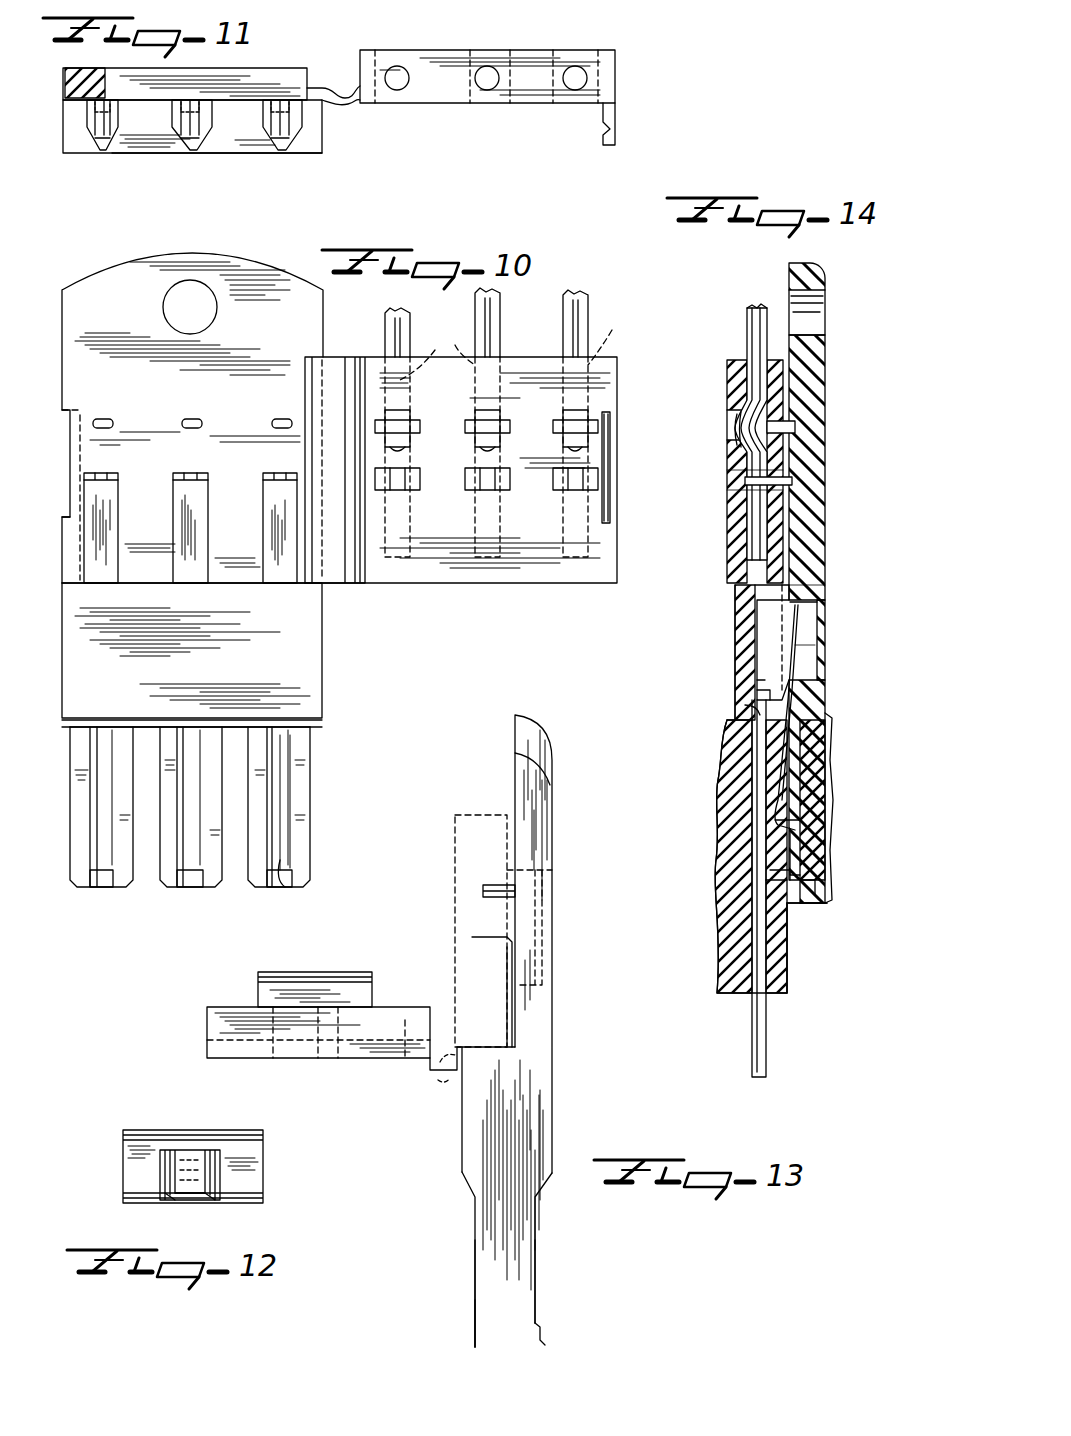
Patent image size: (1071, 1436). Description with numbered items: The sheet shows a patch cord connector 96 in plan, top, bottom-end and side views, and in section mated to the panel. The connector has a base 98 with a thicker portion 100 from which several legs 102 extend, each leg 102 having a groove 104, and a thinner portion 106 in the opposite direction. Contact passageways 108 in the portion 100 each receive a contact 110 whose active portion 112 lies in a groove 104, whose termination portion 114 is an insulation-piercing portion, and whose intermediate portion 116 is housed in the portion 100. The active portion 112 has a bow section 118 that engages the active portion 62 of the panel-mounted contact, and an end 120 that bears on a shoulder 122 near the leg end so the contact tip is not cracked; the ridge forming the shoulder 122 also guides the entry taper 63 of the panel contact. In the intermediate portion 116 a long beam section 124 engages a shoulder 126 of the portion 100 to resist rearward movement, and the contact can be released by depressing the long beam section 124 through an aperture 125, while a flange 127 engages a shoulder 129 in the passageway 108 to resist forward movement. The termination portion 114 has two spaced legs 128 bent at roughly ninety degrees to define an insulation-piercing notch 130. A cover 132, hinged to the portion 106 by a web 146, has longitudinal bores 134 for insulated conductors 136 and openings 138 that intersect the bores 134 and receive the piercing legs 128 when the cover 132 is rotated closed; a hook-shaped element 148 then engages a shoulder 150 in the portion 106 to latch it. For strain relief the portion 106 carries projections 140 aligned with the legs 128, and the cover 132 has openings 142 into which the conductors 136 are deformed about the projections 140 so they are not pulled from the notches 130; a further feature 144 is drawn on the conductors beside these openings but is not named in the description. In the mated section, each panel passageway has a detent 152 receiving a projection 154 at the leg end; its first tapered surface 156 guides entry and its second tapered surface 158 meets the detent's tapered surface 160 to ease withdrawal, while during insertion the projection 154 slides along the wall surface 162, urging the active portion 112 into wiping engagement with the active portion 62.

In FIG. 14, the active portion of panel mounted contact 62 is at (748, 822).
In FIG. 14, the entry taper 63 is at (750, 712).
In FIG. 11, the patch cord connector 96 is at (110, 158).
In FIG. 10, the patch cord connector 96 is at (68, 865).
In FIG. 13, the patch cord connector 96 is at (472, 1272).
In FIG. 10, the base 98 is at (62, 583).
In FIG. 13, the base 98 is at (535, 1025).
In FIG. 11, the base portion 100 is at (320, 153).
In FIG. 10, the base portion 100 is at (72, 672).
In FIG. 13, the base portion 100 is at (462, 1150).
In FIG. 12, the base portion 100 is at (145, 1130).
In FIG. 10, the leg 102 is at (70, 795).
In FIG. 13, the leg 102 is at (520, 1238).
In FIG. 10, the groove 104 is at (95, 872).
In FIG. 11, the body portion 106 is at (262, 72).
In FIG. 10, the body portion 106 is at (75, 387).
In FIG. 14, the body portion 106 is at (820, 338).
In FIG. 13, the body portion 106 is at (515, 782).
In FIG. 14, the contact passageway 108 is at (742, 615).
In FIG. 10, the contact 110 is at (308, 588).
In FIG. 10, the active portion 112 is at (280, 800).
In FIG. 14, the active portion 112 is at (752, 768).
In FIG. 12, the active portion 112 is at (190, 1150).
In FIG. 10, the termination portion 114 is at (90, 540).
In FIG. 14, the termination portion 114 is at (795, 483).
In FIG. 14, the intermediate portion 116 is at (800, 670).
In FIG. 14, the bow section 118 is at (790, 812).
In FIG. 14, the end 120 is at (760, 868).
In FIG. 10, the shoulder 122 is at (280, 880).
In FIG. 14, the shoulder 122 is at (770, 888).
In FIG. 12, the shoulder 122 is at (192, 1195).
In FIG. 14, the long beam section 124 is at (812, 620).
In FIG. 14, the aperture 125 is at (815, 645).
In FIG. 14, the shoulder 126 is at (828, 610).
In FIG. 14, the flange 127 is at (760, 672).
In FIG. 14, the shoulder 129 is at (760, 690).
In FIG. 11, the spaced legs 128 is at (88, 123).
In FIG. 10, the spaced legs 128 is at (118, 478).
In FIG. 14, the spaced legs 128 is at (730, 478).
In FIG. 13, the spaced legs 128 is at (478, 940).
In FIG. 11, the insulation-piercing notch 130 is at (98, 148).
In FIG. 11, the cover 132 is at (525, 52).
In FIG. 14, the cover 132 is at (733, 530).
In FIG. 13, the cover 132 is at (238, 1060).
In FIG. 11, the longitudinal bore 134 is at (405, 85).
In FIG. 10, the longitudinal bore 134 is at (521, 341).
In FIG. 10, the insulated patch cord conductor 136 is at (385, 340).
In FIG. 14, the insulated patch cord conductor 136 is at (755, 342).
In FIG. 11, the opening 138 is at (478, 60).
In FIG. 10, the opening 138 is at (422, 480).
In FIG. 11, the projection 140 is at (120, 125).
In FIG. 10, the projection 140 is at (275, 420).
In FIG. 14, the projection 140 is at (795, 433).
In FIG. 13, the projection 140 is at (483, 885).
In FIG. 10, the opening 142 is at (410, 422).
In FIG. 10, the crimp portion 144 is at (405, 455).
In FIG. 14, the crimp portion 144 is at (735, 415).
In FIG. 11, the web 146 is at (345, 85).
In FIG. 10, the web 146 is at (342, 590).
In FIG. 13, the web 146 is at (445, 1082).
In FIG. 11, the hook-shaped element 148 is at (600, 135).
In FIG. 10, the hook-shaped element 148 is at (612, 520).
In FIG. 13, the hook-shaped element 148 is at (335, 972).
In FIG. 11, the shoulder 150 is at (70, 82).
In FIG. 10, the shoulder 150 is at (72, 453).
In FIG. 13, the shoulder 150 is at (540, 905).
In FIG. 14, the detent 152 is at (828, 905).
In FIG. 14, the projection 154 is at (828, 900).
In FIG. 13, the projection 154 is at (543, 1340).
In FIG. 12, the projection 154 is at (215, 1200).
In FIG. 14, the first tapered surface 156 is at (808, 905).
In FIG. 12, the first tapered surface 156 is at (165, 1200).
In FIG. 14, the second tapered surface 158 is at (805, 850).
In FIG. 14, the tapered surface 160 is at (818, 880).
In FIG. 14, the wall surface 162 is at (810, 770).